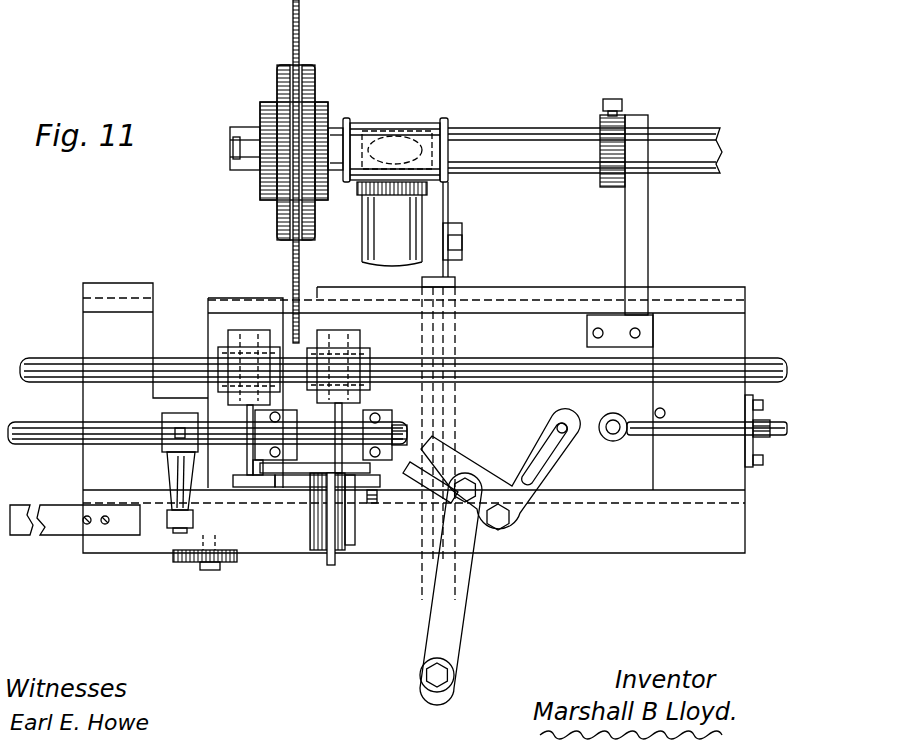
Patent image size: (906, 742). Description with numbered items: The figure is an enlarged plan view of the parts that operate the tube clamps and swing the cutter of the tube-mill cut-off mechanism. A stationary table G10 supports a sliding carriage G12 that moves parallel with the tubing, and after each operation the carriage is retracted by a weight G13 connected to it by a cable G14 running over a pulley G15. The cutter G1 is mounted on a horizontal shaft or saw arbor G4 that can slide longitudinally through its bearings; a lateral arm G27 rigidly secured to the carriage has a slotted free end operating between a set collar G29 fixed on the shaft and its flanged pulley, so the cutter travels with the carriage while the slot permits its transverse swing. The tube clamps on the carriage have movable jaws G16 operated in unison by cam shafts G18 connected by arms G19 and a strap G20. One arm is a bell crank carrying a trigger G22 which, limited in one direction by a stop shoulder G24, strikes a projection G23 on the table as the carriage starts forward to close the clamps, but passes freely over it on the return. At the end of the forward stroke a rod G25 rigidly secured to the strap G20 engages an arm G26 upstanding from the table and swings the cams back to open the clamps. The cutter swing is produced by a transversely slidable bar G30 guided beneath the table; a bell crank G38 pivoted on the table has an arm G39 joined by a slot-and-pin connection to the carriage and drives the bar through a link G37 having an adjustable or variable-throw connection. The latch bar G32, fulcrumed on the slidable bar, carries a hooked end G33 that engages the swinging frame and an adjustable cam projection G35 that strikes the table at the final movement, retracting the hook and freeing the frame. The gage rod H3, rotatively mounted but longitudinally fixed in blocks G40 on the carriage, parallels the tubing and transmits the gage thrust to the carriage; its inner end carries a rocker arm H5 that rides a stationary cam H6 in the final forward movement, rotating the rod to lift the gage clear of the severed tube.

The cutter G1 is at (300, 40).
The cutter shaft G4 is at (507, 138).
The stationary table G10 is at (622, 545).
The sliding carriage G12 is at (220, 305).
The weight G13 is at (362, 238).
The cable G14 is at (688, 433).
The pulley G15 is at (773, 440).
The movable jaw G16 is at (225, 360).
The cam shafts G18 is at (257, 450).
The arms G19 is at (253, 480).
The strap G20 is at (312, 468).
The trigger G22 is at (378, 494).
The projection G23 is at (343, 555).
The stop shoulder G24 is at (348, 492).
The rod G25 is at (328, 565).
The arm G26 is at (228, 563).
The lateral arm G27 is at (637, 231).
The set collar G29 is at (603, 190).
The transversely slidable bar G30 is at (433, 712).
The latch bar G32 is at (449, 198).
The hooked end G33 is at (441, 118).
The adjustable cam projection G35 is at (462, 232).
The link G37 is at (460, 612).
The bell crank G38 is at (447, 453).
The arm G39 is at (555, 418).
The blocks G40 is at (388, 421).
The rod H3 is at (34, 444).
The rocker arm H5 is at (175, 467).
The stationary cam H6 is at (65, 528).